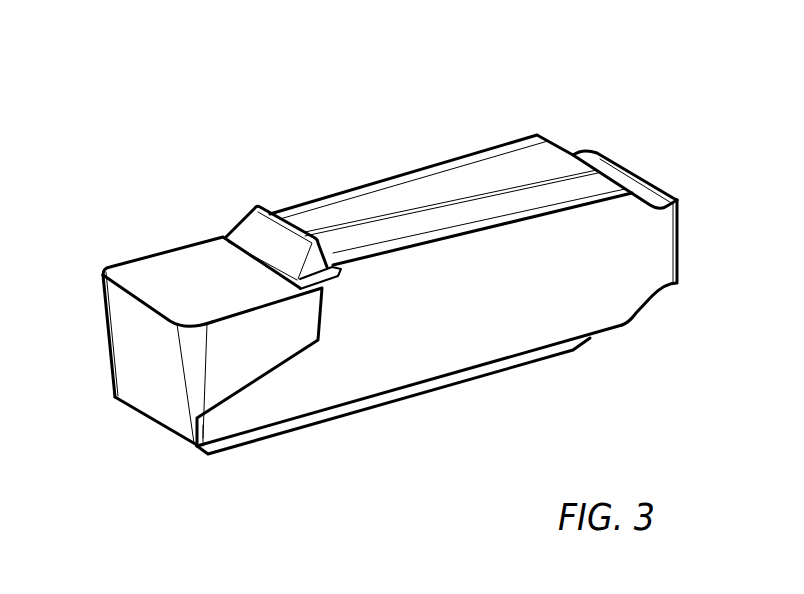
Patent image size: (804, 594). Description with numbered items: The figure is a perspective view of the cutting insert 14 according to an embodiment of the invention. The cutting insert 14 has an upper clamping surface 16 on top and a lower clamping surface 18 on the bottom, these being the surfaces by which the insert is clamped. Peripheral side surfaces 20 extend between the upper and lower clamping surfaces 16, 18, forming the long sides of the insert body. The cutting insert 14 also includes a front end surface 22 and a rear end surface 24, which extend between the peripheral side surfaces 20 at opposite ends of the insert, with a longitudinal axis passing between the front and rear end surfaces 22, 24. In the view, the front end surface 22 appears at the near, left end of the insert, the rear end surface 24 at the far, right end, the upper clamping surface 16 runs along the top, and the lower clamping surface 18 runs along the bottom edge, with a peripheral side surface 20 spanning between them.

The cutting insert 14 is at (392, 256).
The upper clamping surface 16 is at (417, 150).
The lower clamping surface 18 is at (297, 446).
The peripheral side surfaces 20 is at (507, 335).
The front end surface 22 is at (124, 360).
The rear end surface 24 is at (710, 220).